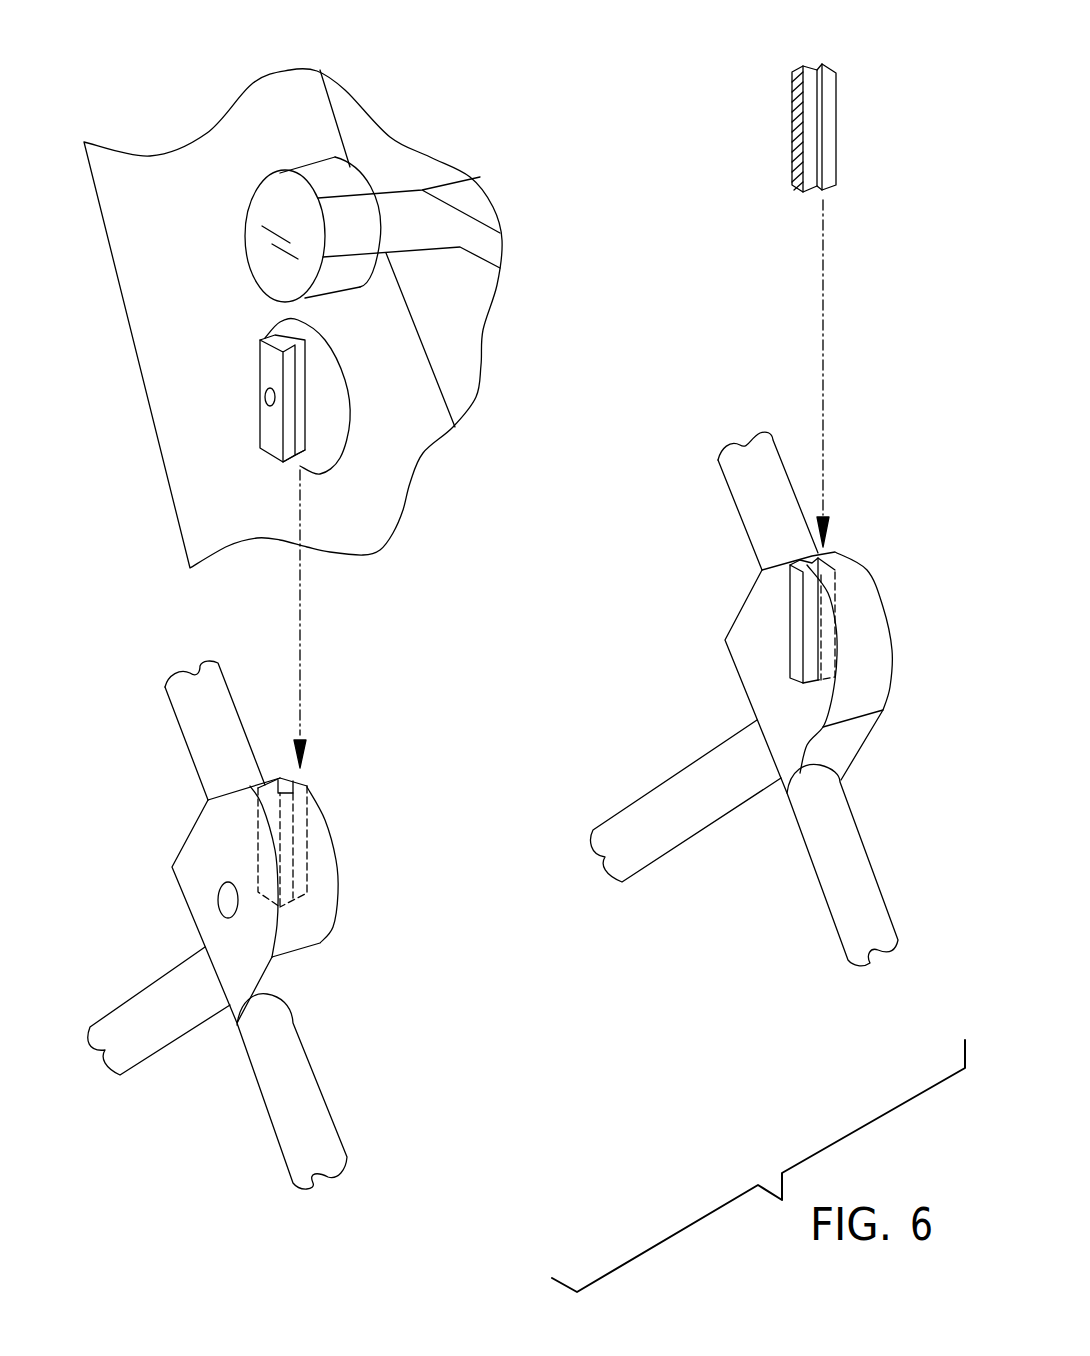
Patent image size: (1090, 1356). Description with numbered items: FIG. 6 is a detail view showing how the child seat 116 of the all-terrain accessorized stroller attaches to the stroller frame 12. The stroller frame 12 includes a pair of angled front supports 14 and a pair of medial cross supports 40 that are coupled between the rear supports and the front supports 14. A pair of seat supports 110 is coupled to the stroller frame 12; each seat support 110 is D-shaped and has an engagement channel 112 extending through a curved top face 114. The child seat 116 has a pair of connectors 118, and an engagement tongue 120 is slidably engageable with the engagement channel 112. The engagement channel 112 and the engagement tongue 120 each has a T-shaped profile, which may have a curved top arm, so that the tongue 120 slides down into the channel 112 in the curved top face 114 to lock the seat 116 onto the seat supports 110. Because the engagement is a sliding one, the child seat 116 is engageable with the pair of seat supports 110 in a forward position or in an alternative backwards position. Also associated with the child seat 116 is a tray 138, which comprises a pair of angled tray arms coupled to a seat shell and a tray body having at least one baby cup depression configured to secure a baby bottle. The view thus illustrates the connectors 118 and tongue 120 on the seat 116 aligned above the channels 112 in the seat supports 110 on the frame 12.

The stroller frame 12 is at (297, 333).
The pair of angled front supports 14 is at (843, 880).
The pair of medial cross supports 40 is at (163, 1000).
The pair of seat supports 110 is at (783, 732).
The engagement channel 112 is at (800, 620).
The curved top face 114 is at (868, 637).
The child seat 116 is at (287, 110).
The pair of connectors 118 is at (320, 412).
The engagement tongue 120 is at (260, 380).
The tray 138 is at (392, 223).